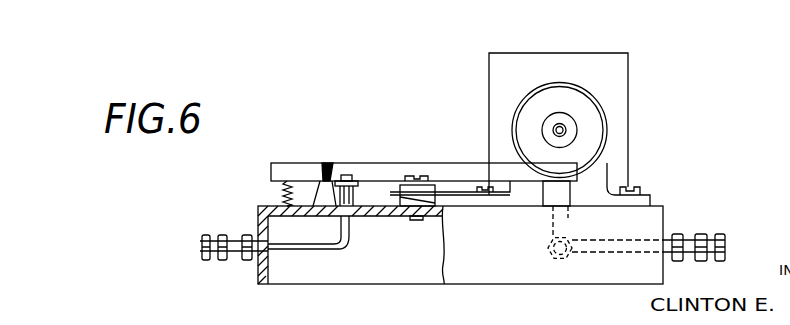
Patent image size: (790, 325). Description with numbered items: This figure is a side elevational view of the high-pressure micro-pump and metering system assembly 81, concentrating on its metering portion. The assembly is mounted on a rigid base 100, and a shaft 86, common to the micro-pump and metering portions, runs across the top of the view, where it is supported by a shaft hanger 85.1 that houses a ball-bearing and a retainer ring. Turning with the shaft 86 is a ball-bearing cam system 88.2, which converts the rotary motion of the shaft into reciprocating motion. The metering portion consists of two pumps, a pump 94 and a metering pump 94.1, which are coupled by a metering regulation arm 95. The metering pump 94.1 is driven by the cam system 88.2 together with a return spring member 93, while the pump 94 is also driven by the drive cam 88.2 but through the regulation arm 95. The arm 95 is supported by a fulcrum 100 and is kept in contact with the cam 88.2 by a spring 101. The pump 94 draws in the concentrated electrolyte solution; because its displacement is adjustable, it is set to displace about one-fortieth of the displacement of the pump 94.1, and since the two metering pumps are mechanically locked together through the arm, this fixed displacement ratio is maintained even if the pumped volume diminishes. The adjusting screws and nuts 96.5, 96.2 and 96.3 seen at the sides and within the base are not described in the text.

The high-pressure micro-pump and metering system assembly 81 is at (506, 256).
The shaft hanger 85.1 is at (597, 193).
The shaft 86 is at (565, 128).
The ball-bearing cam system 88.2 is at (584, 88).
The return spring member 93 is at (456, 190).
The pump 94 is at (347, 176).
The metering pump 94.1 is at (568, 218).
The metering regulation arm 95 is at (398, 167).
The adjusting screw 96.2 is at (697, 235).
The nut 96.3 is at (557, 261).
The adjusting screw 96.5 is at (233, 242).
The rigid base 100 is at (314, 200).
The spring 101 is at (281, 203).